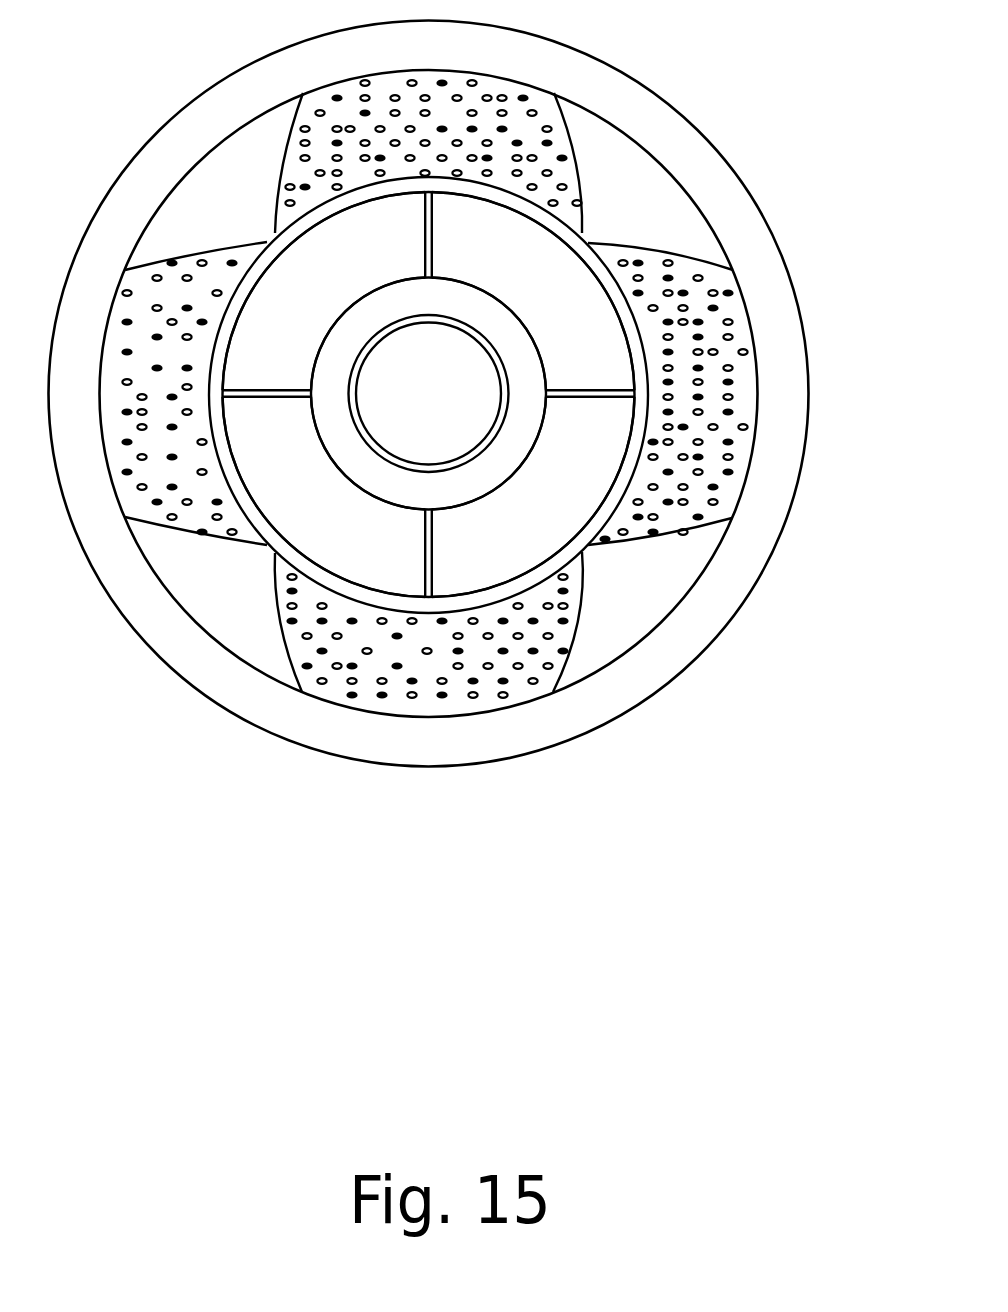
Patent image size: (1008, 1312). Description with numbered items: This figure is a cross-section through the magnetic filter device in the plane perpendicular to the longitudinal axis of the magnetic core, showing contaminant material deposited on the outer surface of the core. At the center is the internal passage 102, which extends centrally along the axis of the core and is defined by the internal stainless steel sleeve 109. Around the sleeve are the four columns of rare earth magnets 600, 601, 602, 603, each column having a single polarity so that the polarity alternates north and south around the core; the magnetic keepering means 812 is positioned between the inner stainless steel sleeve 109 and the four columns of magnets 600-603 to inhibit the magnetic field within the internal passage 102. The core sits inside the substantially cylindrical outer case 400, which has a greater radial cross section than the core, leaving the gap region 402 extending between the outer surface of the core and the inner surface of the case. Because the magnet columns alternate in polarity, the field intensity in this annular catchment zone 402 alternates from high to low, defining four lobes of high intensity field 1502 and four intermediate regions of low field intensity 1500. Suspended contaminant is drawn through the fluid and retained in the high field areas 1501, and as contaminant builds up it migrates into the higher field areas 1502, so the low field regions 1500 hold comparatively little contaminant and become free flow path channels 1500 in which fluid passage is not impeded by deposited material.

The outer case 400 is at (630, 98).
The gap region 402 is at (186, 164).
The region of low field intensity 1500 is at (642, 187).
The high field area 1501 is at (732, 390).
The lobe of high intensity field 1502 is at (723, 521).
The magnetic keepering means 812 is at (452, 308).
The internal stainless steel sleeve 109 is at (392, 461).
The internal passage 102 is at (456, 407).
The first column of rare earth magnets 600 is at (293, 444).
The second column of rare earth magnets 601 is at (604, 444).
The column of rare earth magnets 602 is at (604, 357).
The column of rare earth magnets 603 is at (394, 254).